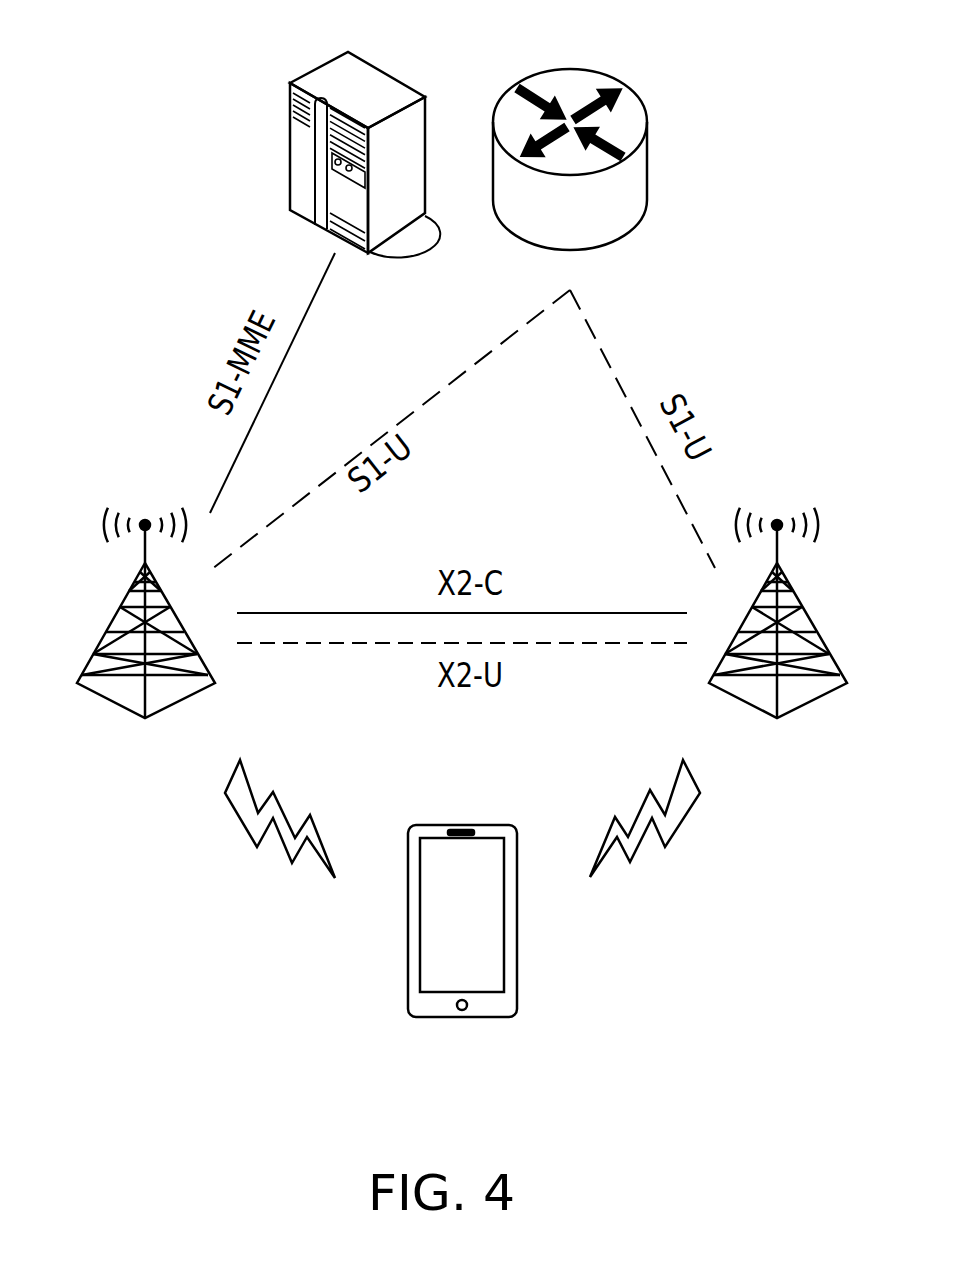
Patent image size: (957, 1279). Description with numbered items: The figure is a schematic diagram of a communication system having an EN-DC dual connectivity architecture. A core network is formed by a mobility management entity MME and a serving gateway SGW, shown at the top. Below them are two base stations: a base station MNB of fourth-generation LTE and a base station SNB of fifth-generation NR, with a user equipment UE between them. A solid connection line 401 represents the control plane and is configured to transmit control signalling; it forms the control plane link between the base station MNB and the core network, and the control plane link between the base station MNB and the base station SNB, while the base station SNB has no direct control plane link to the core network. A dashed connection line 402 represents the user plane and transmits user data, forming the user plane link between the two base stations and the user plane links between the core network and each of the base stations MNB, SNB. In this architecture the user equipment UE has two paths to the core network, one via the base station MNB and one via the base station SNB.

The connection line 401 is at (157, 1017).
The connection line 402 is at (157, 1058).
The mobility management entity MME is at (385, 70).
The serving gateway SGW is at (571, 68).
The base station MNB is at (110, 702).
The base station SNB is at (813, 702).
The user equipment UE is at (462, 825).